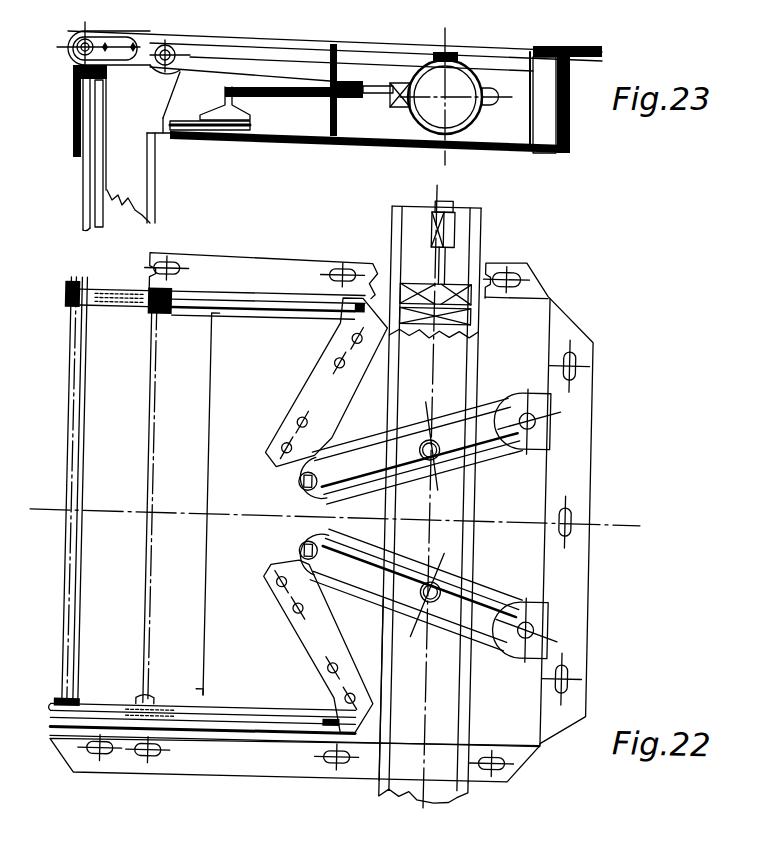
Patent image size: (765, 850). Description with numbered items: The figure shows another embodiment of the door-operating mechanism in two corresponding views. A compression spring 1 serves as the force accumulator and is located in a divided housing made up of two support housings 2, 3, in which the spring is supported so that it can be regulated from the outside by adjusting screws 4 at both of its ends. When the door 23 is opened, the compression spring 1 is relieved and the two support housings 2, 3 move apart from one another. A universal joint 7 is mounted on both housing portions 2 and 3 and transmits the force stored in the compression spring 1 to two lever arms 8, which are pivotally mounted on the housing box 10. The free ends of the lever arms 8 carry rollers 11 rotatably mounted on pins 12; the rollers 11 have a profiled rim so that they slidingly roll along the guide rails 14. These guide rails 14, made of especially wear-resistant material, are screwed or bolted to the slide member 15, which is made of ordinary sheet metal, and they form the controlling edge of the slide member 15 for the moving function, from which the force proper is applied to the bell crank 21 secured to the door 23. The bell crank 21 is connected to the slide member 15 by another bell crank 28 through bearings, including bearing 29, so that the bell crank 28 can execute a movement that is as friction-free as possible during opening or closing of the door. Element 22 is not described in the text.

In FIG. 23, the compression spring 1 is at (455, 62).
In FIG. 22, the compression spring 1 is at (462, 313).
In FIG. 22, the support housing 2 is at (464, 222).
In FIG. 22, the support housing 3 is at (472, 721).
In FIG. 22, the adjusting screw 4 is at (436, 210).
In FIG. 22, the universal joint 7 is at (446, 454).
In FIG. 22, the lever arm 8 is at (486, 444).
In FIG. 22, the housing box 10 is at (581, 344).
In FIG. 22, the roller 11 is at (290, 481).
In FIG. 22, the pin 12 is at (321, 456).
In FIG. 22, the guide rail 14 is at (306, 384).
In FIG. 22, the slide member 15 is at (187, 707).
In FIG. 23, the bell crank 21 is at (122, 37).
In FIG. 22, the side rail 22 is at (76, 390).
In FIG. 23, the door 23 is at (140, 164).
In FIG. 23, the bell crank 28 is at (213, 50).
In FIG. 22, the bell crank 28 is at (219, 295).
In FIG. 23, the bearing 29 is at (166, 44).